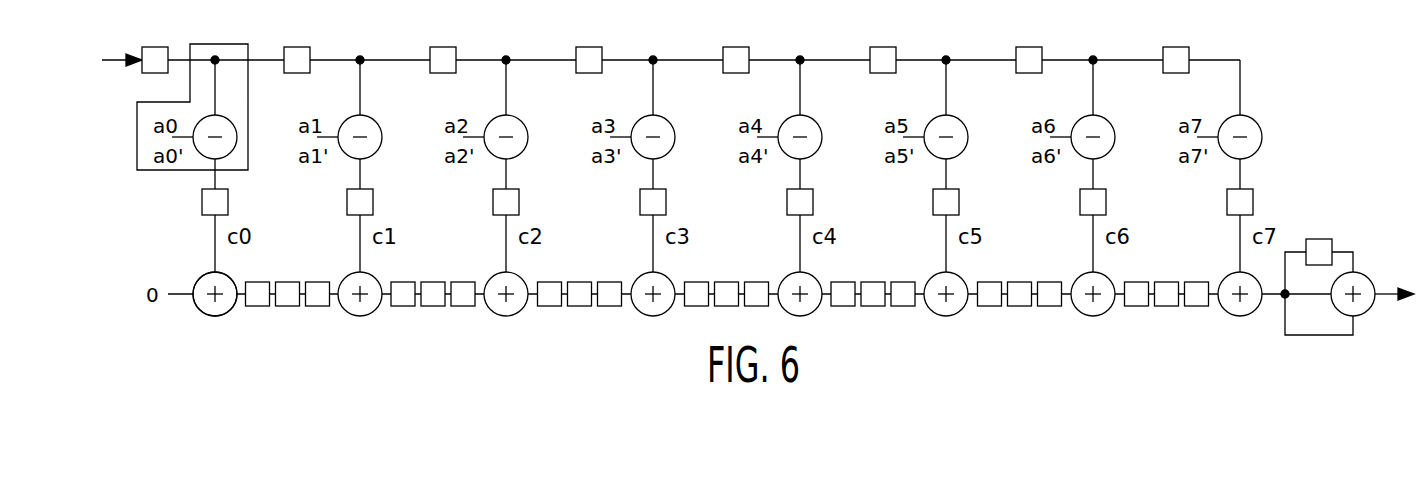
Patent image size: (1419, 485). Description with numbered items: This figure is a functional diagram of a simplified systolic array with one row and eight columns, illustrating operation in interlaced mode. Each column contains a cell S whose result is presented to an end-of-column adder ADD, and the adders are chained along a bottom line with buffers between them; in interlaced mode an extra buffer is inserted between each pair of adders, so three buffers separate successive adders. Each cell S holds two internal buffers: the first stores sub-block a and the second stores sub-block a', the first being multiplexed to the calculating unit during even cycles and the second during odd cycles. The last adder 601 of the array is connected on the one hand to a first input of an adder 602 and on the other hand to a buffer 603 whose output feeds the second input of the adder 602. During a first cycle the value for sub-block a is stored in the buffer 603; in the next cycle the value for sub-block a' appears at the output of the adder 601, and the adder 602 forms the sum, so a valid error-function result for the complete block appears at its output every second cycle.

The last adder 601 is at (1238, 317).
The adder 602 is at (1363, 273).
The buffer 603 is at (1318, 238).
The cell S is at (134, 165).
The adder ADD is at (199, 279).